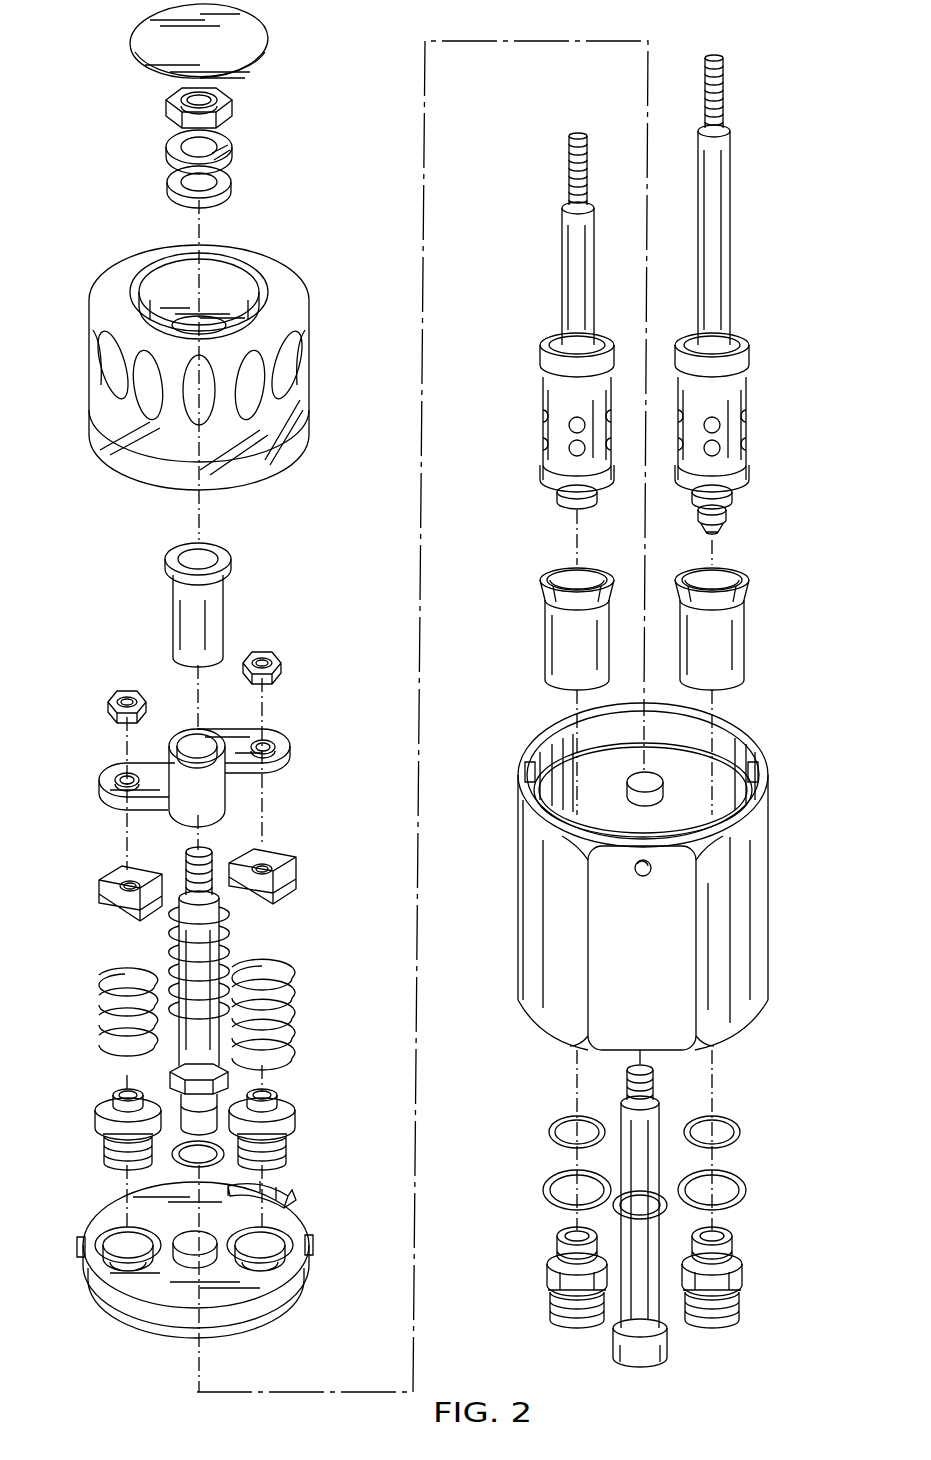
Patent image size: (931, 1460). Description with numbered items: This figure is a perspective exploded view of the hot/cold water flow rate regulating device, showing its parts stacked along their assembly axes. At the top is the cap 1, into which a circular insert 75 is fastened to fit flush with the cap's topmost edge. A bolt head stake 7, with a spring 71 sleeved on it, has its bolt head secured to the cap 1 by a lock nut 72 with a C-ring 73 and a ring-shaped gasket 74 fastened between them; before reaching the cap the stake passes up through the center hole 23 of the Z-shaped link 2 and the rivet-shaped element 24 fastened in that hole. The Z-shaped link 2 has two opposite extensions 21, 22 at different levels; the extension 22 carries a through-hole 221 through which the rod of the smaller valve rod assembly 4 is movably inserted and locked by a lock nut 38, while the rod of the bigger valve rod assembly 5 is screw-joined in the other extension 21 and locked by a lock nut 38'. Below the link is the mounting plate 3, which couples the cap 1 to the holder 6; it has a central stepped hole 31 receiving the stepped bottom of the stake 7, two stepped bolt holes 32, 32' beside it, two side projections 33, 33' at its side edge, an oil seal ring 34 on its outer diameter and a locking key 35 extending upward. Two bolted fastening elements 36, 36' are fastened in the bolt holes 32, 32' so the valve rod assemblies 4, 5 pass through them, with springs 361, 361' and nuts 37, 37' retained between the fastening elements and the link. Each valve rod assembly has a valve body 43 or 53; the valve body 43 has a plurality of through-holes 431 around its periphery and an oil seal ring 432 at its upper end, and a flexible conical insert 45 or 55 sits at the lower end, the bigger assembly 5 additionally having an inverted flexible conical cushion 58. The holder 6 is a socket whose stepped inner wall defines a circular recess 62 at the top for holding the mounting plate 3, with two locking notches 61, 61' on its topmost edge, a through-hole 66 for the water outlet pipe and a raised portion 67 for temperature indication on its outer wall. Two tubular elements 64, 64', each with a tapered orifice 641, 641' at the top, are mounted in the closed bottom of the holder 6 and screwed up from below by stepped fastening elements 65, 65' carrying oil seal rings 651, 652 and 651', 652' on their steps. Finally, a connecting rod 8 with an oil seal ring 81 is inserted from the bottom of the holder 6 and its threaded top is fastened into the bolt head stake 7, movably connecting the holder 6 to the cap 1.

The cap 1 is at (290, 287).
The Z-shaped link 2 is at (291, 758).
The extension 21 is at (250, 735).
The extension 22 is at (135, 805).
The center hole 23 is at (195, 740).
The through-hole 221 is at (274, 742).
The rivet-shaped element 24 is at (225, 590).
The mounting plate 3 is at (300, 1223).
The stepped hole 31 is at (185, 1256).
The stepped bolt hole 32 is at (97, 1265).
The stepped bolt hole 32' is at (287, 1267).
The side projection 33 is at (59, 1232).
The side projection 33' is at (333, 1243).
The oil seal ring 34 is at (172, 1322).
The locking key 35 is at (282, 1186).
The bolted fastening element 36 is at (106, 1129).
The bolted fastening element 36' is at (289, 1129).
The spring 361 is at (101, 1012).
The spring 361' is at (294, 1014).
The nut 37 is at (106, 893).
The nut 37' is at (287, 872).
The lock nut 38 is at (106, 707).
The lock nut 38' is at (286, 659).
The valve rod assembly 4 is at (561, 283).
The valve body 43 is at (542, 392).
The through-holes 431 is at (569, 447).
The oil seal ring 432 is at (541, 348).
The flexible conical insert 45 is at (557, 497).
The valve rod assembly 5 is at (731, 253).
The valve body 53 is at (750, 392).
The flexible conical insert 55 is at (731, 492).
The flexible conical cushion 58 is at (729, 521).
The holder 6 is at (769, 890).
The locking notch 61 is at (507, 765).
The locking notch 61' is at (782, 759).
The circular recess 62 is at (560, 742).
The tubular element 64 is at (547, 645).
The tubular element 64' is at (743, 645).
The tapered orifice 641 is at (580, 572).
The tapered orifice 641' is at (741, 582).
The stepped fastening element 65 is at (554, 1277).
The stepped fastening element 65' is at (734, 1277).
The oil seal ring 651 is at (546, 1132).
The oil seal ring 651' is at (741, 1125).
The oil seal ring 652 is at (546, 1189).
The oil seal ring 652' is at (746, 1189).
The through-hole 66 is at (655, 783).
The raised portion 67 is at (644, 877).
The bolt head stake 7 is at (211, 915).
The spring 71 is at (231, 958).
The lock nut 72 is at (233, 107).
The C-ring 73 is at (229, 150).
The ring-shaped gasket 74 is at (232, 188).
The circular insert 75 is at (262, 36).
The connecting rod 8 is at (672, 1080).
The oil seal ring 81 is at (664, 1200).